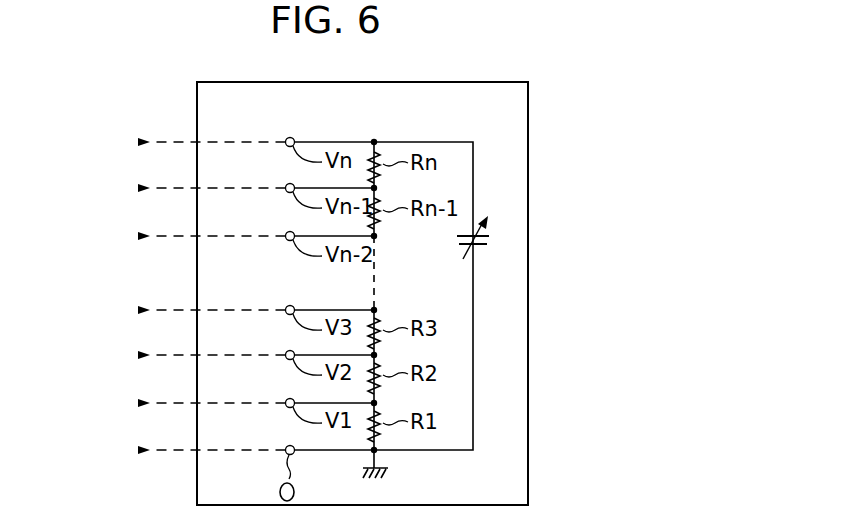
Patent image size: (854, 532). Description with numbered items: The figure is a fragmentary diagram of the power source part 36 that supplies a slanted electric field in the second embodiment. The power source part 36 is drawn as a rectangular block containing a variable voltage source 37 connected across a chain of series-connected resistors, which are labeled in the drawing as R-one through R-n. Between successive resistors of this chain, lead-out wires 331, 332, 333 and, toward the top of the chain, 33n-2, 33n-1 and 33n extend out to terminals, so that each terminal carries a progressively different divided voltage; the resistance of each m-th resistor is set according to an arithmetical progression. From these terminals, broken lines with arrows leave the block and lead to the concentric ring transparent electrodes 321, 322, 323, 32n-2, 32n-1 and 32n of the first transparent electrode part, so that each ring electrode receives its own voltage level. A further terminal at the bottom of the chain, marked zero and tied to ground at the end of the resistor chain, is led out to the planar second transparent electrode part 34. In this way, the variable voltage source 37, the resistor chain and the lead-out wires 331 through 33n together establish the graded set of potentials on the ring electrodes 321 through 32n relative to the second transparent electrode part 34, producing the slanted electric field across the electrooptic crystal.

The power source part 36 is at (476, 81).
The variable voltage source 37 is at (489, 250).
The lead-out wire 33n is at (232, 140).
The lead-out wire 33n-1 is at (232, 188).
The lead-out wire 33n-2 is at (232, 236).
The lead-out wire 333 is at (232, 308).
The lead-out wire 332 is at (232, 354).
The lead-out wire 331 is at (232, 402).
The concentric ring transparent electrode 32n is at (183, 143).
The concentric ring transparent electrode 32n-1 is at (183, 190).
The concentric ring transparent electrode 32n-2 is at (179, 238).
The concentric ring transparent electrode 323 is at (183, 313).
The concentric ring transparent electrode 322 is at (183, 358).
The concentric ring transparent electrode 321 is at (183, 406).
The second transparent electrode part 34 is at (227, 461).